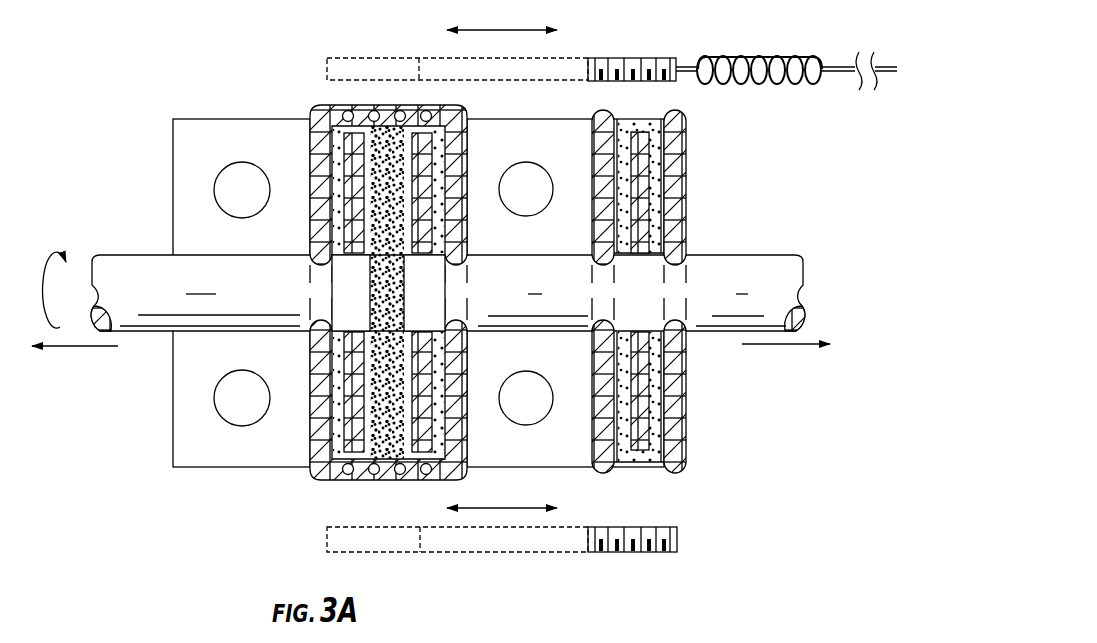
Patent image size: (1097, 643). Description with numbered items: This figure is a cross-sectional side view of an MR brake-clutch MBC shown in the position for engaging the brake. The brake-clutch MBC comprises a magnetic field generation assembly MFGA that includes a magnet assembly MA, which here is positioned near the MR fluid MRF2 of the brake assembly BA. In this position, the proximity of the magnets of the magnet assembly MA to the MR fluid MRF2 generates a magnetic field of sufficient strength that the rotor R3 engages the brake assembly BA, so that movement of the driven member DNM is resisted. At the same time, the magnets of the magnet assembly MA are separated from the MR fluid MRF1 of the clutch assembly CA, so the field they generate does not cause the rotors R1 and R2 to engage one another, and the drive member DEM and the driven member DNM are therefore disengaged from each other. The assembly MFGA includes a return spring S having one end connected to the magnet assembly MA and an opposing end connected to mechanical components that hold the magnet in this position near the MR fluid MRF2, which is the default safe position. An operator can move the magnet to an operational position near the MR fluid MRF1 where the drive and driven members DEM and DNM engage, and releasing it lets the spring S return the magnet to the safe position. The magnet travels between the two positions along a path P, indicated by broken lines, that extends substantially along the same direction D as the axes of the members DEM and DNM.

The MR brake-clutch MBC is at (134, 162).
The drive member DEM is at (127, 255).
The driven member DNM is at (748, 255).
The clutch assembly CA is at (316, 480).
The MR fluid MRF1 is at (392, 453).
The MR fluid MRF2 is at (622, 455).
The rotor R1 is at (352, 132).
The rotor R2 is at (428, 130).
The rotor R3 is at (640, 132).
The brake assembly BA is at (688, 153).
The path P is at (428, 58).
The magnet assembly MA is at (628, 58).
The direction D is at (520, 30).
The return spring S is at (752, 57).
The magnetic field generation assembly MFGA is at (826, 46).